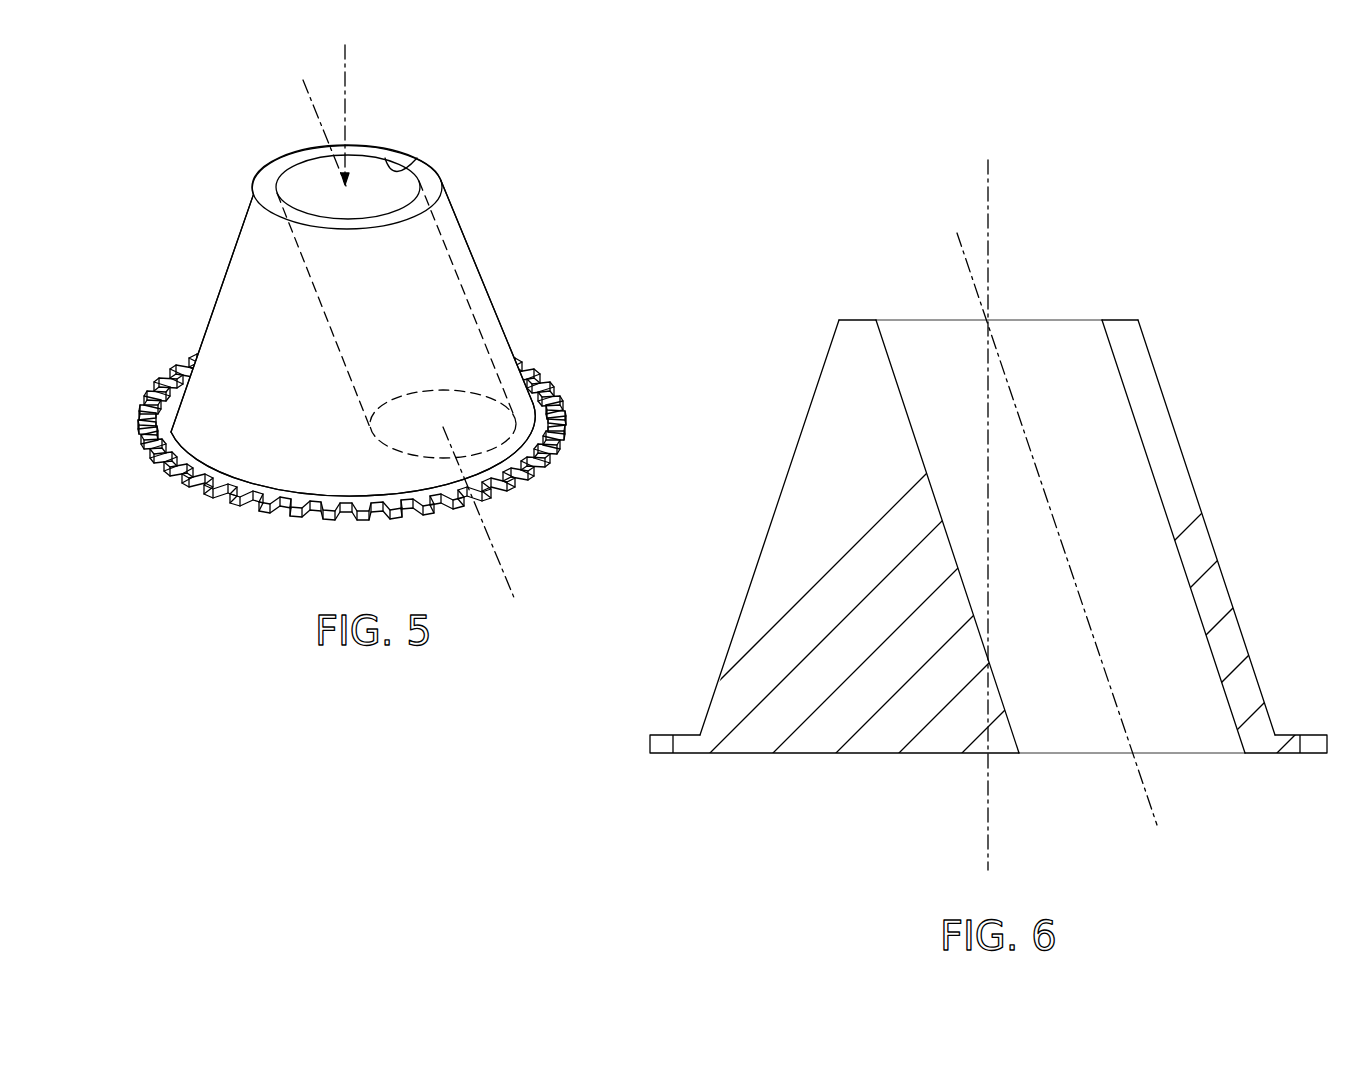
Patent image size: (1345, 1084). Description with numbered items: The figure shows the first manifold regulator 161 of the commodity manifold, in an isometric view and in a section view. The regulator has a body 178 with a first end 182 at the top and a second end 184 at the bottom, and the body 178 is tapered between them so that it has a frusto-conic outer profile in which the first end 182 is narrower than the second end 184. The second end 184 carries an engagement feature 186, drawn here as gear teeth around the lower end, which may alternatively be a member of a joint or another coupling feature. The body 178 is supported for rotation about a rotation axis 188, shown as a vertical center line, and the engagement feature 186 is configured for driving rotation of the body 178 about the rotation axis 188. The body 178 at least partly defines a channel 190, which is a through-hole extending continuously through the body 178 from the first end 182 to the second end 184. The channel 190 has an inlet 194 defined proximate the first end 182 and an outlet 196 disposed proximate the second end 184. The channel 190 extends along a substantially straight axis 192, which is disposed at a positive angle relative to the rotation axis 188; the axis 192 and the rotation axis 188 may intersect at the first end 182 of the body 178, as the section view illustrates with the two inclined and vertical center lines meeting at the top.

In FIG. 5, the first manifold regulator 161 is at (493, 255).
In FIG. 6, the first manifold regulator 161 is at (776, 472).
In FIG. 5, the body 178 is at (235, 295).
In FIG. 6, the body 178 is at (745, 620).
In FIG. 5, the first end 182 is at (262, 183).
In FIG. 6, the first end 182 is at (845, 320).
In FIG. 5, the second end 184 is at (353, 500).
In FIG. 6, the second end 184 is at (815, 753).
In FIG. 5, the engagement feature 186 is at (136, 397).
In FIG. 6, the engagement feature 186 is at (637, 741).
In FIG. 5, the rotation axis 188 is at (352, 98).
In FIG. 6, the rotation axis 188 is at (990, 238).
In FIG. 5, the channel 190 is at (392, 197).
In FIG. 6, the channel 190 is at (1068, 365).
In FIG. 5, the axis 192 is at (308, 103).
In FIG. 6, the axis 192 is at (1145, 785).
In FIG. 5, the inlet 194 is at (400, 175).
In FIG. 6, the inlet 194 is at (890, 357).
In FIG. 5, the outlet 196 is at (548, 465).
In FIG. 6, the outlet 196 is at (1240, 733).